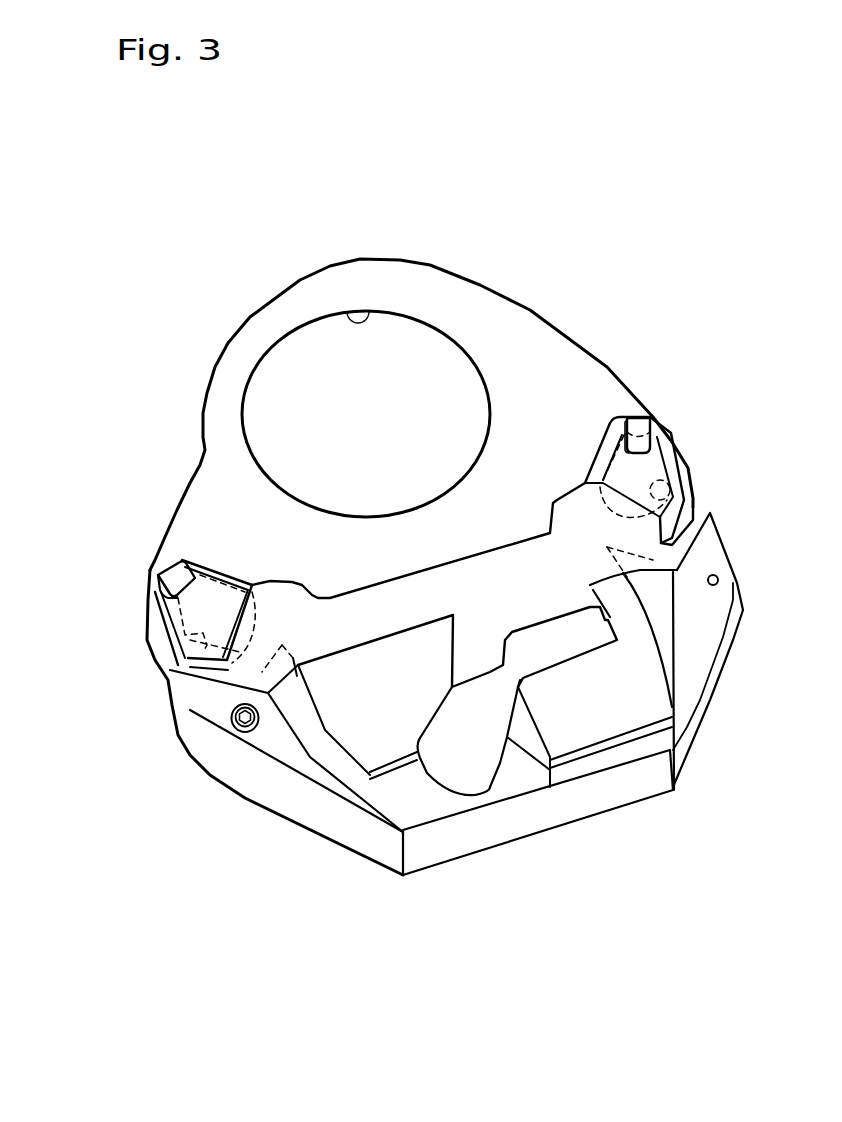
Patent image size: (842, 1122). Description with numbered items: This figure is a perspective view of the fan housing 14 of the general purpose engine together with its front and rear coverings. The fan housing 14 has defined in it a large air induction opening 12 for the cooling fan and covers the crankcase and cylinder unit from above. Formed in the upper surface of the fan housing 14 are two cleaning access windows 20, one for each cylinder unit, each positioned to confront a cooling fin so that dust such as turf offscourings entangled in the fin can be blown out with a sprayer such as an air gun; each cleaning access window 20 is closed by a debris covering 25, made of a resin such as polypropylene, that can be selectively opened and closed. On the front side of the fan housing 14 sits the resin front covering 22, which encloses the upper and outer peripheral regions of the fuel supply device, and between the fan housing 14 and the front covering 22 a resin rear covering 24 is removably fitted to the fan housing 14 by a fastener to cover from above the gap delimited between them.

The air induction opening 12 is at (369, 313).
The fan housing 14 is at (547, 327).
The cleaning access window 20 is at (665, 478).
The front covering 22 is at (370, 870).
The rear covering 24 is at (520, 565).
The debris covering 25 is at (637, 470).